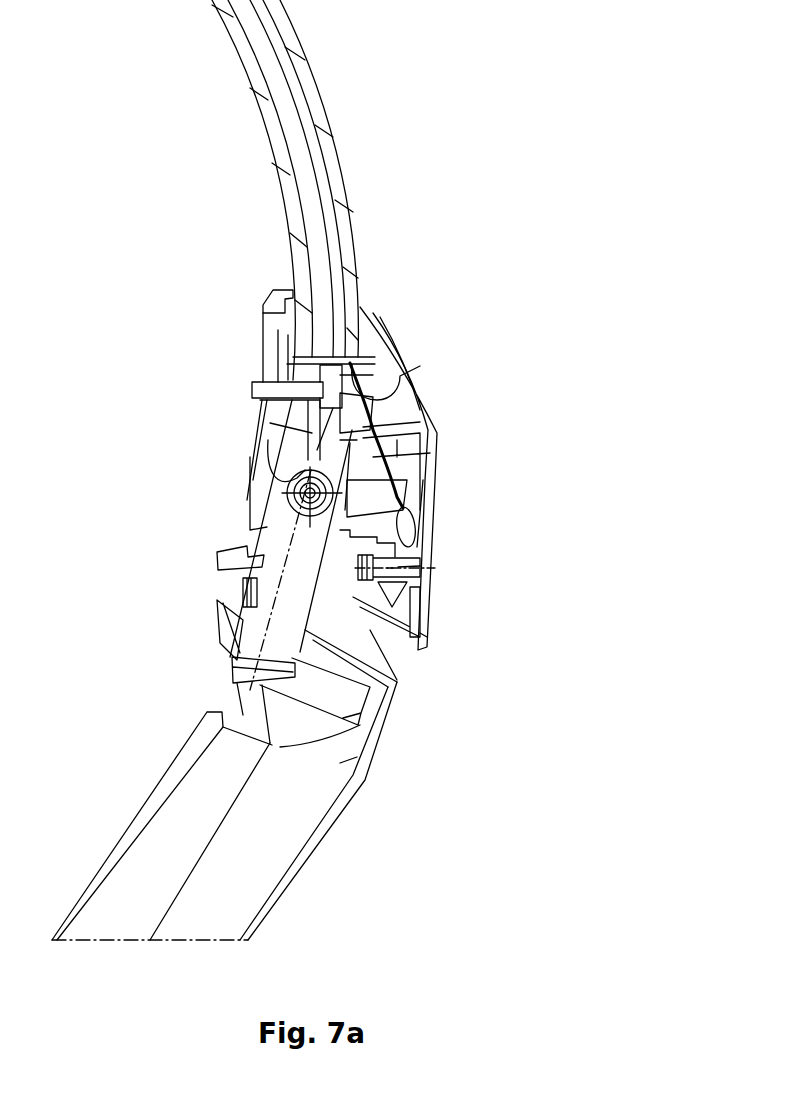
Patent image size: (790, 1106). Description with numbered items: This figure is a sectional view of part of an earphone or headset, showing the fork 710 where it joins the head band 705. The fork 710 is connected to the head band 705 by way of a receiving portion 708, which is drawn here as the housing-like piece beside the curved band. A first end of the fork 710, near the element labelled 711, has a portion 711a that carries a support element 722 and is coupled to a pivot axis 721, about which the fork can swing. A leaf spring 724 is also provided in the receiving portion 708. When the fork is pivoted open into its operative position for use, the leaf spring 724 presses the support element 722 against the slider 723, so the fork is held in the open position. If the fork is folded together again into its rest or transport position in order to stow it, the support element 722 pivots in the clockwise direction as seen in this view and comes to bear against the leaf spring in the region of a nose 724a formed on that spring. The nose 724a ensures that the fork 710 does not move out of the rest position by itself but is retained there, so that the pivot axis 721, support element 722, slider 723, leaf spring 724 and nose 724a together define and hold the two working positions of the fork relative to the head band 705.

The head band 705 is at (312, 80).
The receiving portion 708 is at (440, 443).
The fork 710 is at (172, 815).
The stop block 711 is at (232, 661).
The portion 711a is at (253, 600).
The pivot axis 721 is at (286, 494).
The support element 722 is at (358, 432).
The slider 723 is at (257, 388).
The leaf spring 724 is at (390, 370).
The nose 724a is at (407, 543).